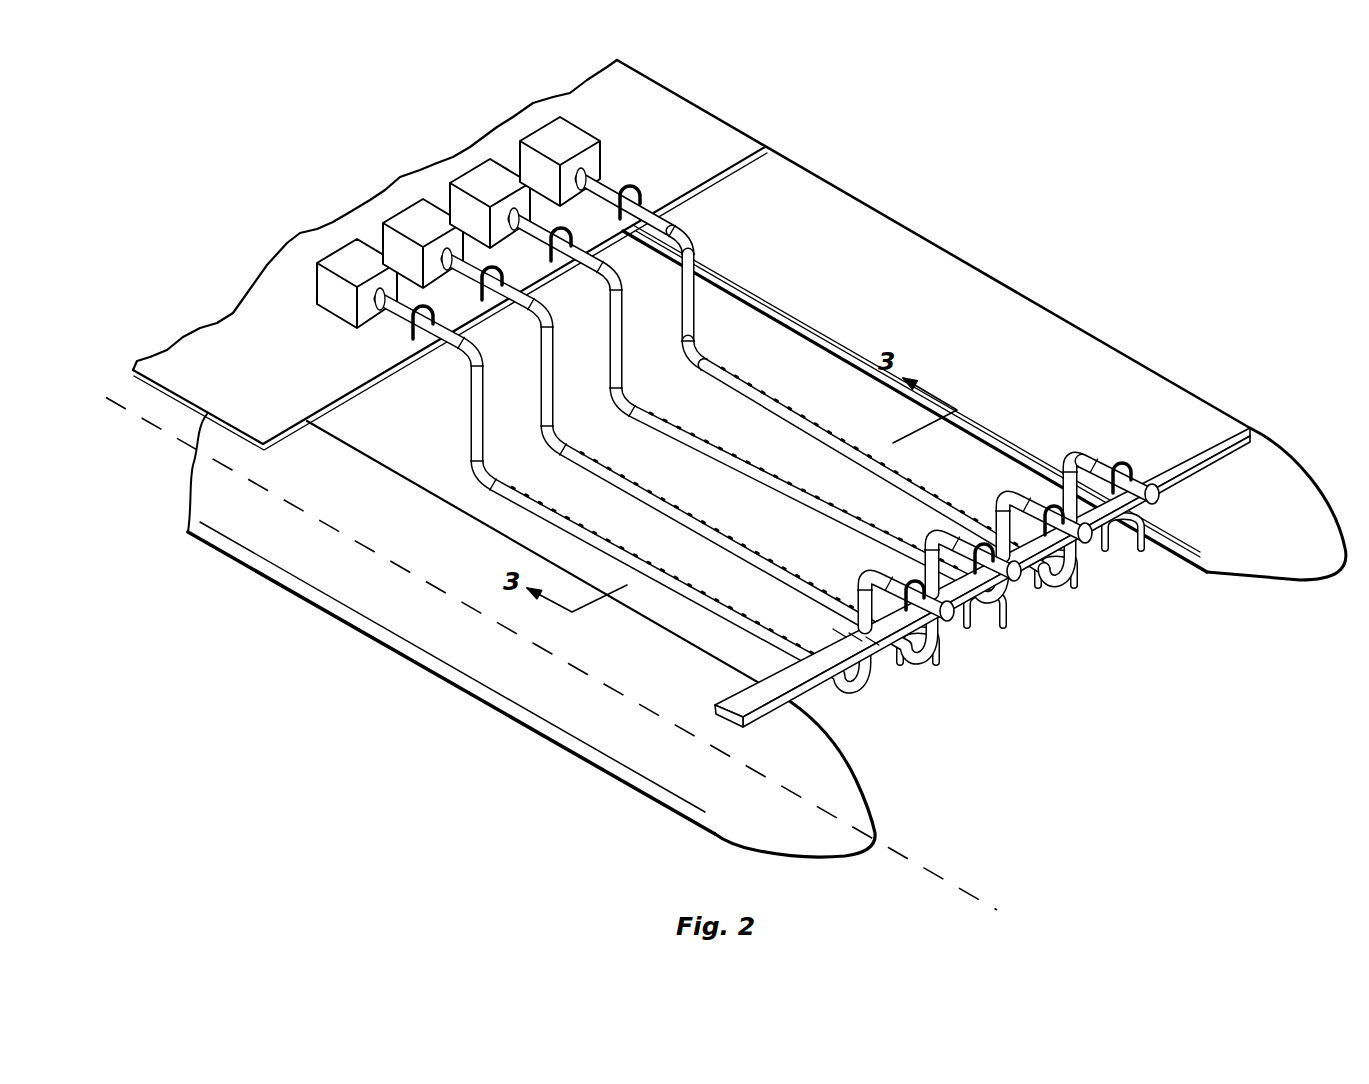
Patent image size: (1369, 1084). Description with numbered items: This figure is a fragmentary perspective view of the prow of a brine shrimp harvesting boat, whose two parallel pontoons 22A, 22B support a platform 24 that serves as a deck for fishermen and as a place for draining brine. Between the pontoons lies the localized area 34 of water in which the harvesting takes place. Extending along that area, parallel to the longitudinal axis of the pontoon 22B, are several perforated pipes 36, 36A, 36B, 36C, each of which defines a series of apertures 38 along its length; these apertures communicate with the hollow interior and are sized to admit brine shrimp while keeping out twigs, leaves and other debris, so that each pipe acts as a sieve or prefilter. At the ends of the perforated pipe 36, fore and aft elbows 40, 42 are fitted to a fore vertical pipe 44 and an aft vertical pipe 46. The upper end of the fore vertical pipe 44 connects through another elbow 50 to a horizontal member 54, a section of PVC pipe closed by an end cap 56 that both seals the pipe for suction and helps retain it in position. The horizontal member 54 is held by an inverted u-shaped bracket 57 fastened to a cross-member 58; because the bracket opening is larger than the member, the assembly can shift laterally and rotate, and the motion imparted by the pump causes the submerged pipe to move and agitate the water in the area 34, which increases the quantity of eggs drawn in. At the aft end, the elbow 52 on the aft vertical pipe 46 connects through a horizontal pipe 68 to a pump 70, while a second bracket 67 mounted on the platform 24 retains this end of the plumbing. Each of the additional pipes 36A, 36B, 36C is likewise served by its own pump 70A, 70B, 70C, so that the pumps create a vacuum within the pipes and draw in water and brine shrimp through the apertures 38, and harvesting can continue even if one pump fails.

The pontoon 22A is at (1270, 529).
The pontoon 22B is at (768, 824).
The platform 24 is at (234, 374).
The localized area 34 is at (721, 492).
The perforated pipe 36 is at (874, 460).
The perforated pipe 36A is at (748, 458).
The perforated pipe 36B is at (720, 522).
The perforated pipe 36C is at (680, 575).
The apertures 38 is at (765, 395).
The fore elbow 40 is at (1066, 580).
The aft elbow 42 is at (700, 357).
The fore vertical pipe 44 is at (1062, 482).
The aft vertical pipe 46 is at (683, 325).
The fore elbow 50 is at (1078, 452).
The aft elbow 52 is at (698, 237).
The horizontal member 54 is at (1120, 470).
The end cap 56 is at (1163, 500).
The bracket 57 is at (1105, 500).
The cross-member 58 is at (790, 684).
The second bracket 67 is at (630, 188).
The horizontal pipe 68 is at (655, 208).
The pump 70 is at (577, 152).
The pump 70A is at (487, 177).
The pump 70B is at (415, 222).
The pump 70C is at (352, 262).